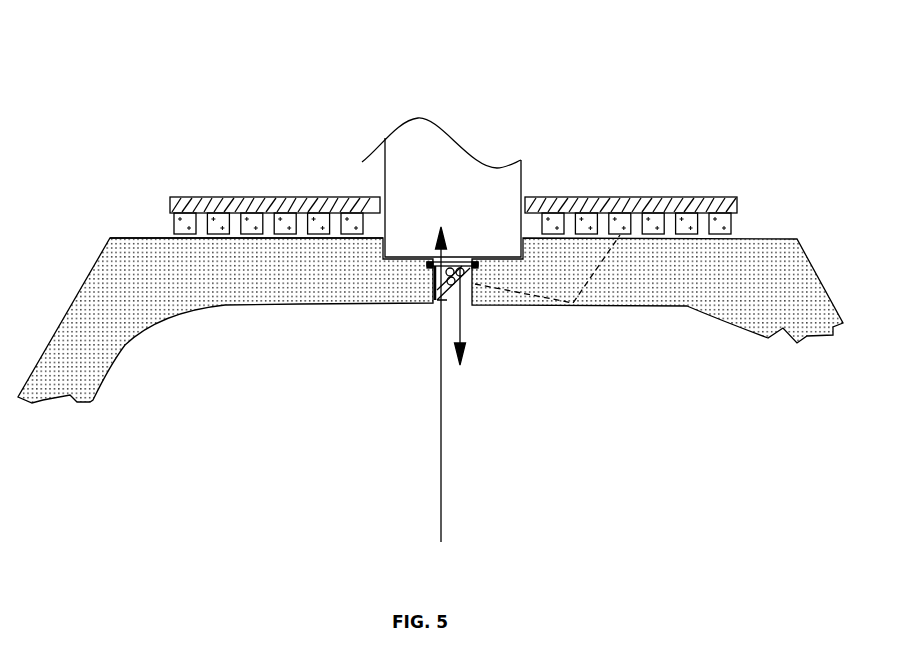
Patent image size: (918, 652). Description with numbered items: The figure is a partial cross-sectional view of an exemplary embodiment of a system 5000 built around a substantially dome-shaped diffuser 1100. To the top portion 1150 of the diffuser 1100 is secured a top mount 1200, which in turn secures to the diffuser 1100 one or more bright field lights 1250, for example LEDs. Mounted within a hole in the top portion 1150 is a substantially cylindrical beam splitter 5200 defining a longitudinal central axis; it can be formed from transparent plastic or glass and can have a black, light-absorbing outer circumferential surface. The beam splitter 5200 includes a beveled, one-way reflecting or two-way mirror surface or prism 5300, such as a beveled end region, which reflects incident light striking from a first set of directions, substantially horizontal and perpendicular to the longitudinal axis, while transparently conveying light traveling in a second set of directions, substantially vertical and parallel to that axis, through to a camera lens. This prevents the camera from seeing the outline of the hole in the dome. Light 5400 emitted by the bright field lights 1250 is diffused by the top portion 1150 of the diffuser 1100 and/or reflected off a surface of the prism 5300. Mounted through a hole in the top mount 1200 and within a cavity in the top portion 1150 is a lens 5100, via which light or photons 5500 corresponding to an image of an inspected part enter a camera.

The system 5000 is at (271, 39).
The diffuser 1100 is at (118, 349).
The top portion 1150 is at (164, 255).
The top mount 1200 is at (746, 183).
The bright field lights 1250 is at (243, 202).
The lens 5100 is at (423, 161).
The beam splitter 5200 is at (422, 308).
The prism 5300 is at (468, 244).
The light 5400 is at (481, 333).
The photons 5500 is at (441, 542).